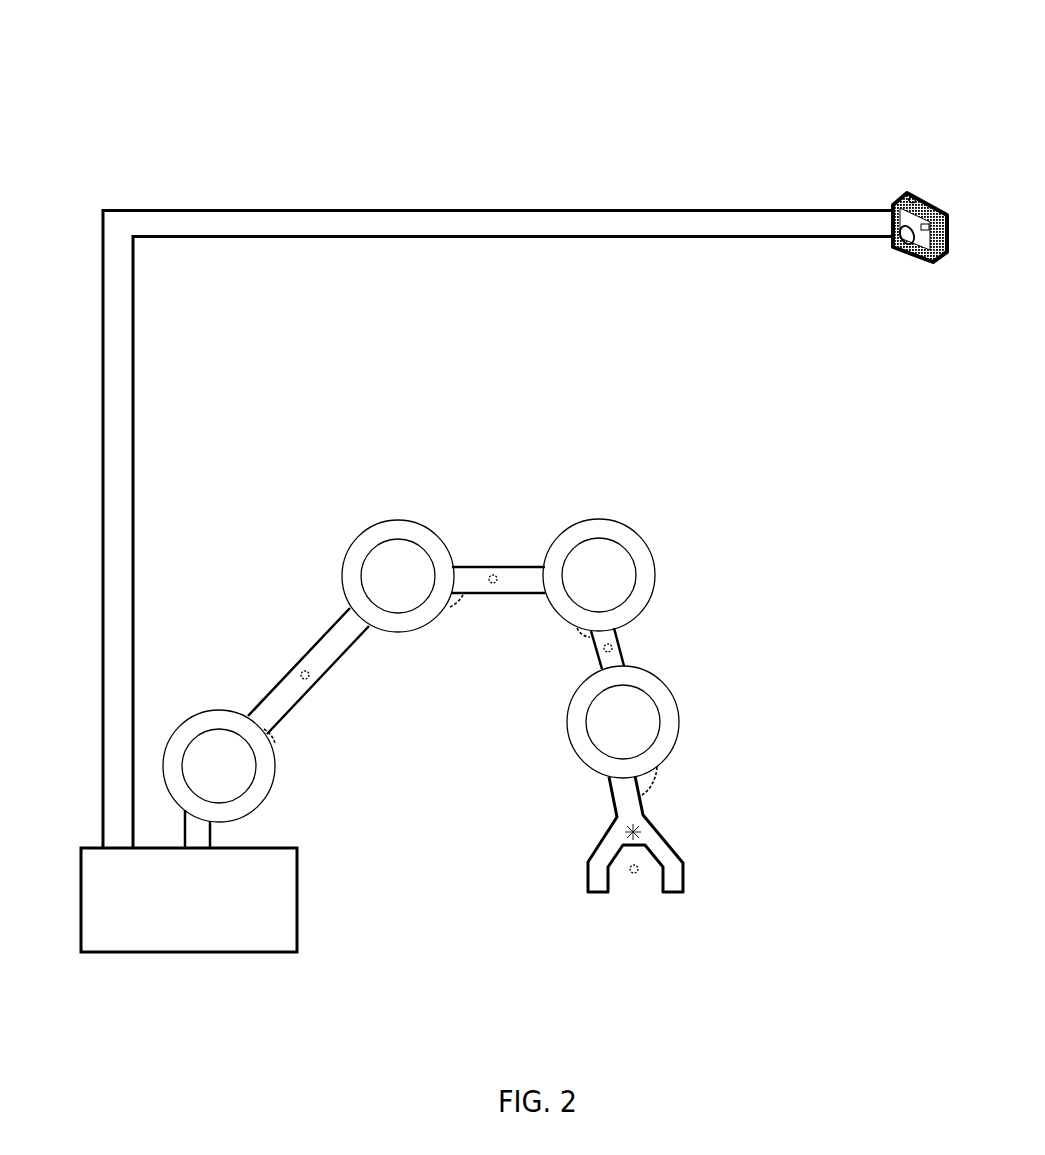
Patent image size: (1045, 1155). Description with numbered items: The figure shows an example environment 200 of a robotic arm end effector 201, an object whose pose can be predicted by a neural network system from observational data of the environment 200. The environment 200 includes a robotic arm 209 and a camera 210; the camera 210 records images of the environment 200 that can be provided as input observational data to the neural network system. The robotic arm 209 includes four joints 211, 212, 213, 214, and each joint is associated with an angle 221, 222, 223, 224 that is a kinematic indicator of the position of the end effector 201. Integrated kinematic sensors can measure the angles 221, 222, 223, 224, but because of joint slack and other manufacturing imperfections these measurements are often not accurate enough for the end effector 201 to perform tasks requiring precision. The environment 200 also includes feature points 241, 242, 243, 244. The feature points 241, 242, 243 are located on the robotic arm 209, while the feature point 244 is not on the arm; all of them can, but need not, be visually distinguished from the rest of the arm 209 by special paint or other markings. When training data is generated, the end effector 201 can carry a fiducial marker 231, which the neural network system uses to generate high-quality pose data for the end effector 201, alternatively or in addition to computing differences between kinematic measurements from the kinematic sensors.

The environment 200 is at (117, 66).
The robotic arm end effector 201 is at (744, 908).
The robotic arm 209 is at (279, 377).
The camera 210 is at (925, 261).
The joint 211 is at (196, 716).
The joint 212 is at (348, 556).
The joint 213 is at (654, 556).
The joint 214 is at (724, 674).
The angle 221 is at (338, 740).
The angle 222 is at (462, 598).
The angle 223 is at (584, 638).
The angle 224 is at (650, 781).
The fiducial marker 231 is at (643, 830).
The feature point 241 is at (302, 673).
The feature point 242 is at (491, 576).
The feature point 243 is at (668, 638).
The feature point 244 is at (634, 874).